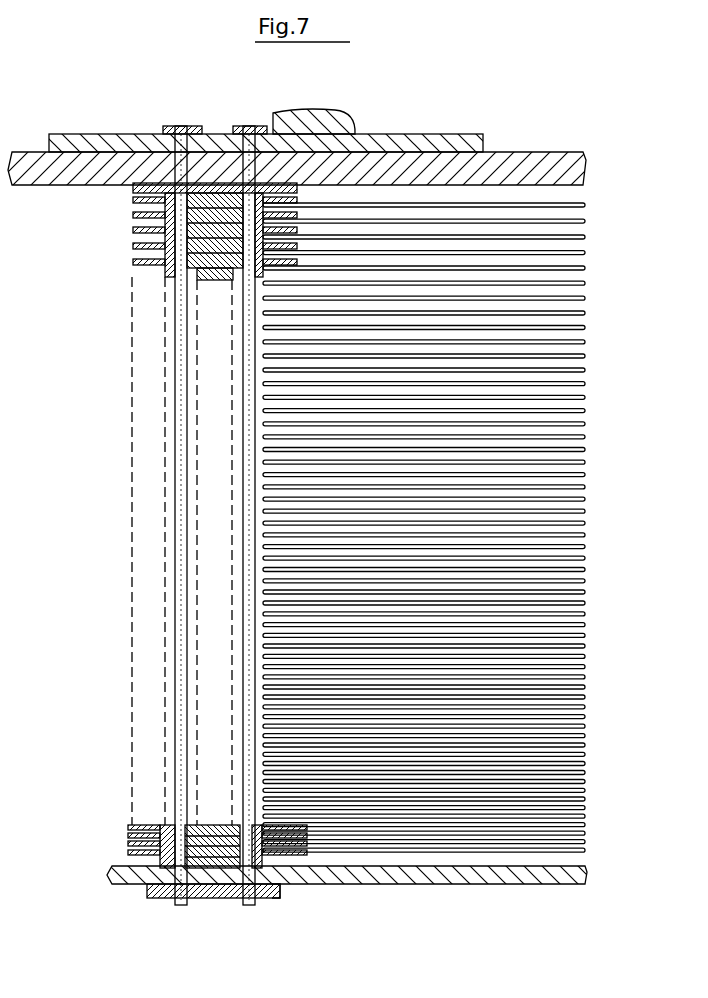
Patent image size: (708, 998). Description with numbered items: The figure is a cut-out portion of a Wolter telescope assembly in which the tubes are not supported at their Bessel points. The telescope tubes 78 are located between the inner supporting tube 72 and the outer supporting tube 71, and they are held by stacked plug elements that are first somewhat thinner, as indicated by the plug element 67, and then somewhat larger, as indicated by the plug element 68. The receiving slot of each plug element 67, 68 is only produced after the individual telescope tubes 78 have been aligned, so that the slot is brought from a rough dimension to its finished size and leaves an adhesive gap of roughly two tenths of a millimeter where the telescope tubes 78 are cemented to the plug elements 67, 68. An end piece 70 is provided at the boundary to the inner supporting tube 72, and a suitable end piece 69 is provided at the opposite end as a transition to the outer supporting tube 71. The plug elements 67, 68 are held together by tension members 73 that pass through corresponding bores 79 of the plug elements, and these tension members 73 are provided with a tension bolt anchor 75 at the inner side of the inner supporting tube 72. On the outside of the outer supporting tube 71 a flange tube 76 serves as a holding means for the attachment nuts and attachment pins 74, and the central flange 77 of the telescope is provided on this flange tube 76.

The plug element 67 is at (140, 823).
The plug element 68 is at (133, 263).
The end piece 69 is at (143, 185).
The end piece 70 is at (158, 857).
The outer supporting tube 71 is at (57, 180).
The inner supporting tube 72 is at (352, 885).
The tension member 73 is at (240, 903).
The attachment nuts and attachment pins 74 is at (235, 126).
The tension bolt anchor 75 is at (275, 899).
The flange tube 76 is at (92, 133).
The central flange 77 is at (345, 117).
The telescope tube 78 is at (586, 212).
The bore 79 is at (245, 310).